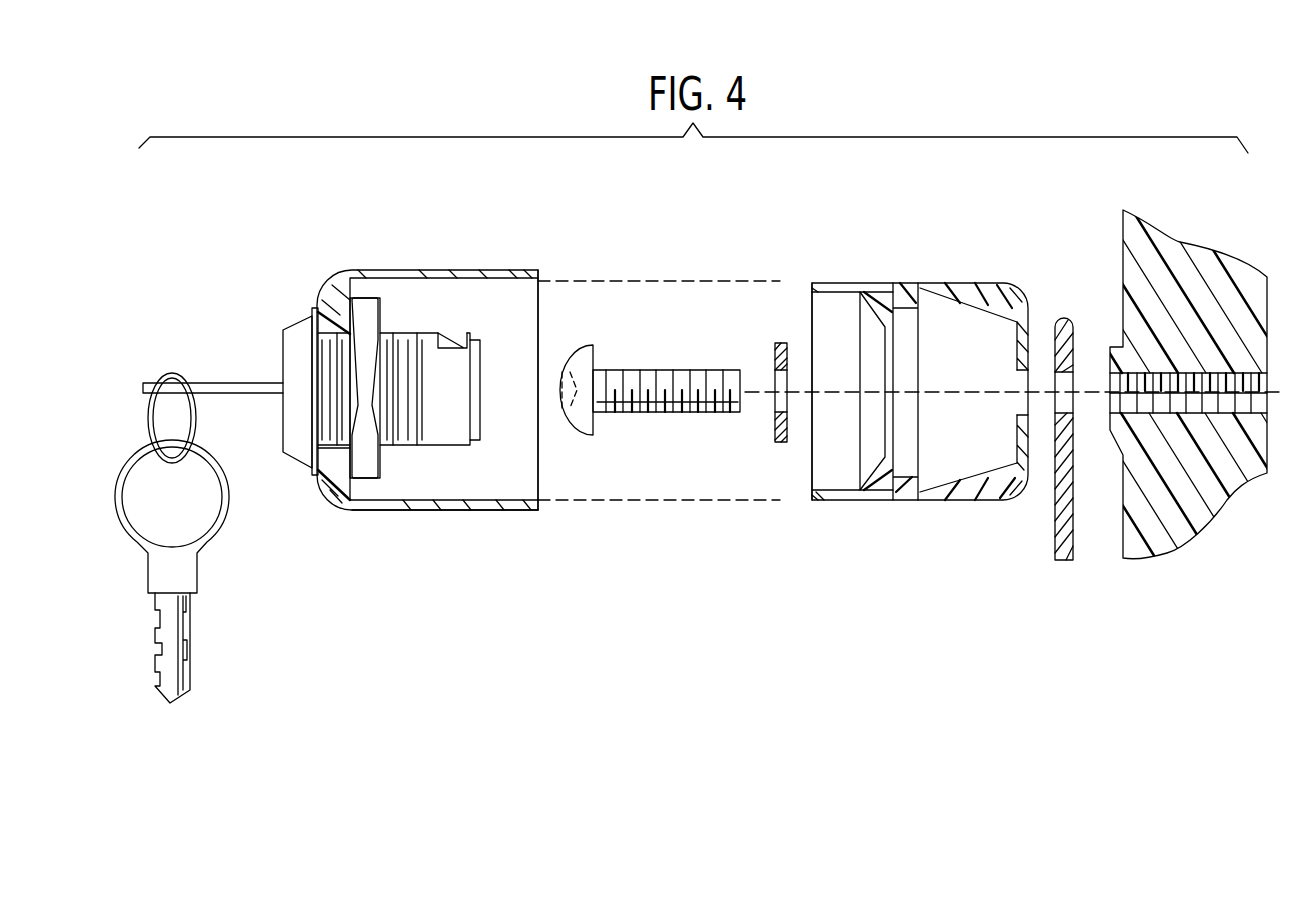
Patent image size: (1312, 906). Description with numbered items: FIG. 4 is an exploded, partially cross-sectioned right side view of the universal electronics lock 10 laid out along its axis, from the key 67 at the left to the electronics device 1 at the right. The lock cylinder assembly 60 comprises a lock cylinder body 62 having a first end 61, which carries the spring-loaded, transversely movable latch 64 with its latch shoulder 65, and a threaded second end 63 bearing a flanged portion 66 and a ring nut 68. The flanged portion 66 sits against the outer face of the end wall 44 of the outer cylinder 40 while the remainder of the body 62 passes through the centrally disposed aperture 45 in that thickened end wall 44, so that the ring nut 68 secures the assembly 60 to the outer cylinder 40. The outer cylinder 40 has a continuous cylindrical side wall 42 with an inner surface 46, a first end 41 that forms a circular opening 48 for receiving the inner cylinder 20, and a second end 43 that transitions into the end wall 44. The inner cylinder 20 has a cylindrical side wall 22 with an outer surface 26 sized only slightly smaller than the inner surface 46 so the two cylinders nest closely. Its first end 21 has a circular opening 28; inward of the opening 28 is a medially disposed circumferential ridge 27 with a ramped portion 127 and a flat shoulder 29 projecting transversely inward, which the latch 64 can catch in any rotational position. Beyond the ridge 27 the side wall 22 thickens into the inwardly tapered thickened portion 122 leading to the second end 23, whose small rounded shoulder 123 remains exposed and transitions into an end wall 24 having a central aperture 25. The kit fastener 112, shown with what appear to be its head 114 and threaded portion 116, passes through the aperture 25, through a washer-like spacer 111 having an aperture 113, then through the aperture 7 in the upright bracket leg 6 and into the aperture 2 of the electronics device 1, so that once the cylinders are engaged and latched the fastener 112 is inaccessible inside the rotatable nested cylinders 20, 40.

The electronics device 1 is at (1207, 250).
The aperture 2 is at (1248, 377).
The upright leg 6 is at (1073, 343).
The aperture 7 is at (1057, 405).
The universal electronics lock 10 is at (674, 249).
The inner cylinder 20 is at (1034, 249).
The first end 21 is at (823, 493).
The side wall 22 is at (958, 290).
The second end 23 is at (1003, 300).
The end wall 24 is at (1023, 340).
The aperture 25 is at (1023, 403).
The outer surface 26 is at (923, 300).
The circumferential ridge 27 is at (873, 300).
The circular opening 28 is at (818, 310).
The flat shoulder 29 is at (918, 307).
The outer cylinder 40 is at (407, 230).
The first end 41 is at (528, 272).
The side wall 42 is at (463, 270).
The second end 43 is at (362, 269).
The end wall 44 is at (332, 285).
The aperture 45 is at (314, 322).
The inner surface 46 is at (528, 275).
The circular opening 48 is at (540, 478).
The lock cylinder assembly 60 is at (299, 499).
The first end 61 is at (458, 440).
The lock cylinder body 62 is at (403, 440).
The second end 63 is at (340, 442).
The latch 64 is at (462, 332).
The shoulder 65 is at (440, 332).
The flanged portion 66 is at (300, 452).
The key 67 is at (230, 383).
The ring nut 68 is at (367, 480).
The spacer 111 is at (782, 445).
The kit fastener 112 is at (633, 370).
The aperture 113 is at (778, 385).
The screw head 114 is at (573, 352).
The threads 116 is at (677, 410).
The thickened portion 122 is at (982, 487).
The rounded shoulder 123 is at (1022, 285).
The ramped portion 127 is at (840, 292).